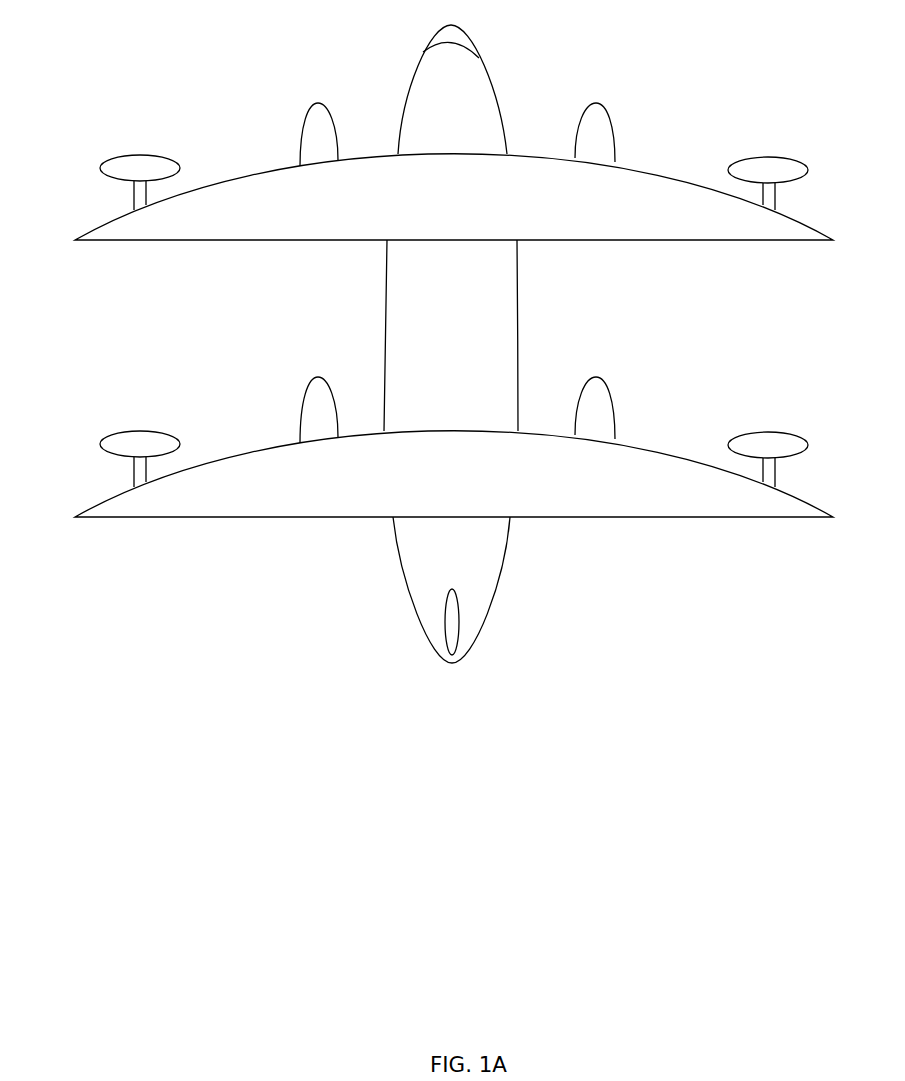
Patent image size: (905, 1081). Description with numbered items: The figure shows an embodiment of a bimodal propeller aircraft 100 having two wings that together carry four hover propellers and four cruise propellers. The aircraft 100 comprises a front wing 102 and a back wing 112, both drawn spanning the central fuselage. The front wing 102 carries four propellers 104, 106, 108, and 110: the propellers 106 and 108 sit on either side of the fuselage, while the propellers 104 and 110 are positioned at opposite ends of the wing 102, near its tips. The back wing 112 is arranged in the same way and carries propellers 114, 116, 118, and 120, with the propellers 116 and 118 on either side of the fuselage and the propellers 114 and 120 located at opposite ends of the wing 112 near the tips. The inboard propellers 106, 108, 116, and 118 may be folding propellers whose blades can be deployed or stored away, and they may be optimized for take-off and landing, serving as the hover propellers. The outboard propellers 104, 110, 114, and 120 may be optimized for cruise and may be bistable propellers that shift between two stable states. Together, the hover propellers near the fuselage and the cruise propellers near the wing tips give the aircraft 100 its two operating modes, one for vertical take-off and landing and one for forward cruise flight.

The aircraft 100 is at (418, 72).
The front wing 102 is at (79, 241).
The propeller 104 is at (108, 179).
The propeller 106 is at (300, 130).
The propeller 108 is at (575, 128).
The propeller 110 is at (730, 172).
The back wing 112 is at (78, 519).
The propeller 114 is at (105, 456).
The propeller 116 is at (300, 407).
The propeller 118 is at (575, 425).
The propeller 120 is at (730, 447).